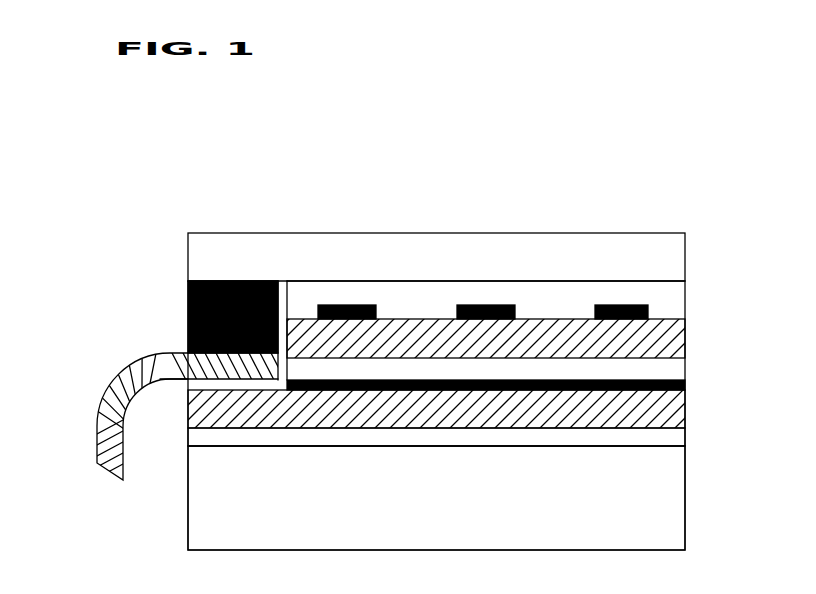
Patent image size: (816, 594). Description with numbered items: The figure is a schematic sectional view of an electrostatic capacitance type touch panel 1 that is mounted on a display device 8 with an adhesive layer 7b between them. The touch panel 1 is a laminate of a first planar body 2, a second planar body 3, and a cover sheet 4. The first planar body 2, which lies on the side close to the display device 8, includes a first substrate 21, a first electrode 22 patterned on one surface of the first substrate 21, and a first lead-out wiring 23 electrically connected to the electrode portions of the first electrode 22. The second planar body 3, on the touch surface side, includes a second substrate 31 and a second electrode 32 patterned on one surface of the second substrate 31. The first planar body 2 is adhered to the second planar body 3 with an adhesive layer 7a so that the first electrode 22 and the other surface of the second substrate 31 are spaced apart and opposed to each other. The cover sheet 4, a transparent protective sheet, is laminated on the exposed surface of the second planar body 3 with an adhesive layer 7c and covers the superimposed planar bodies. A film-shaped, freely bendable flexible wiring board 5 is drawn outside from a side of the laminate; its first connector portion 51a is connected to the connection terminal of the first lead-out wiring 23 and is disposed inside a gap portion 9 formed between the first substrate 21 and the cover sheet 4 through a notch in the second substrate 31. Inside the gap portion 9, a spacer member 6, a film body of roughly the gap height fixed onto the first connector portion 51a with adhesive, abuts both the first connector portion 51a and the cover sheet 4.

The touch panel 1 is at (166, 216).
The first planar body 2 is at (475, 415).
The first substrate 21 is at (686, 425).
The first electrode 22 is at (686, 392).
The second planar body 3 is at (514, 327).
The second substrate 31 is at (748, 297).
The second electrode 32 is at (650, 310).
The cover sheet 4 is at (188, 262).
The flexible wiring board 5 is at (103, 410).
The first connector portion 51a is at (245, 281).
The spacer member 6 is at (188, 312).
The adhesive layer 7a is at (686, 375).
The adhesive layer 7b is at (686, 437).
The adhesive layer 7c is at (678, 292).
The display device 8 is at (686, 500).
The gap portion 9 is at (283, 360).
The first lead-out wiring 23 is at (188, 383).